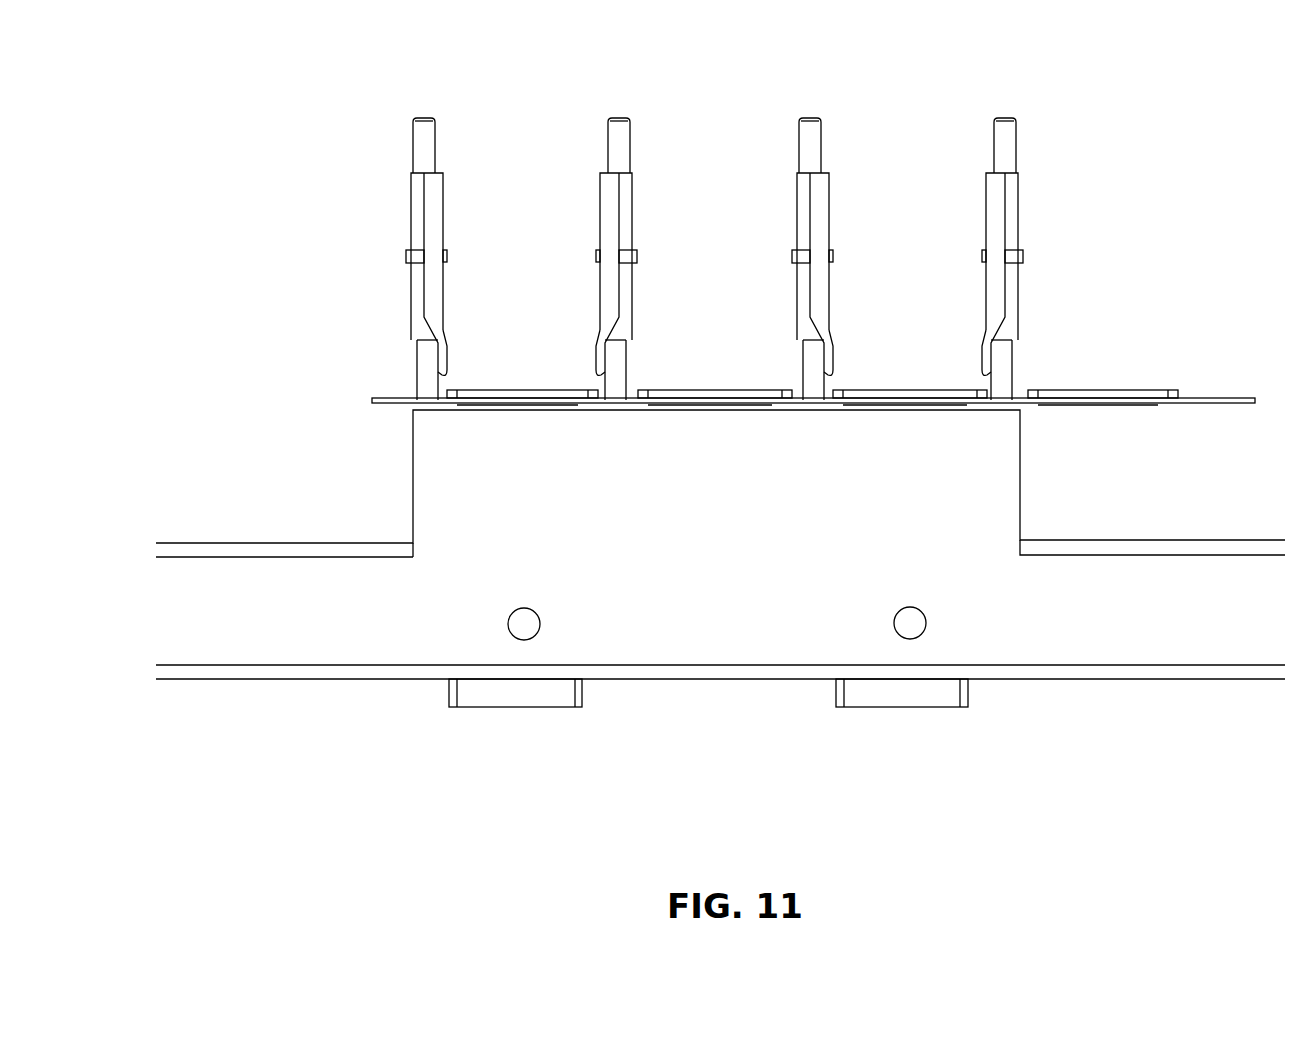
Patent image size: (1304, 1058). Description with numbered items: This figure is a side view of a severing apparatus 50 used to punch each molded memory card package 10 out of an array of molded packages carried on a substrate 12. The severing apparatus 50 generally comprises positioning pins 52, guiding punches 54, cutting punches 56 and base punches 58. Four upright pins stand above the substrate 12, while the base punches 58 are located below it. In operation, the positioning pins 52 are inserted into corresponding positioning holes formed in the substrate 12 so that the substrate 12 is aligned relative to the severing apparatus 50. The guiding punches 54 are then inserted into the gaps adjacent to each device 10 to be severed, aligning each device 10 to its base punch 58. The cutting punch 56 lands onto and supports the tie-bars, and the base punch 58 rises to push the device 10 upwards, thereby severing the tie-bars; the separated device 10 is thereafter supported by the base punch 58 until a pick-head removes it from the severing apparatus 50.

The molded memory card package 10 is at (732, 386).
The substrate 12 is at (1210, 393).
The severing apparatus 50 is at (350, 308).
The positioning pin 52 is at (636, 145).
The guiding punch 54 is at (602, 325).
The cutting punch 56 is at (452, 250).
The base punch 58 is at (592, 709).